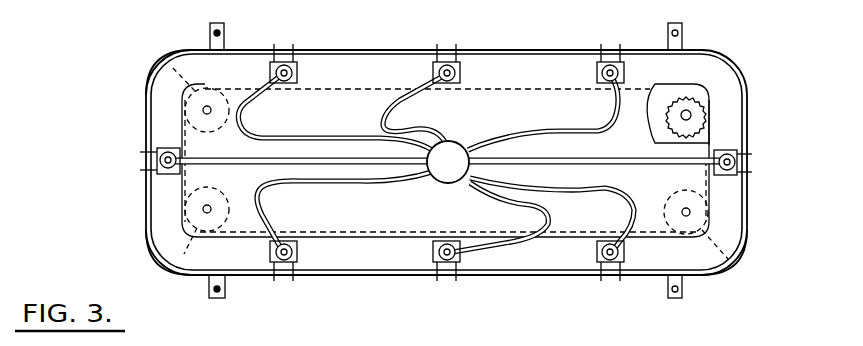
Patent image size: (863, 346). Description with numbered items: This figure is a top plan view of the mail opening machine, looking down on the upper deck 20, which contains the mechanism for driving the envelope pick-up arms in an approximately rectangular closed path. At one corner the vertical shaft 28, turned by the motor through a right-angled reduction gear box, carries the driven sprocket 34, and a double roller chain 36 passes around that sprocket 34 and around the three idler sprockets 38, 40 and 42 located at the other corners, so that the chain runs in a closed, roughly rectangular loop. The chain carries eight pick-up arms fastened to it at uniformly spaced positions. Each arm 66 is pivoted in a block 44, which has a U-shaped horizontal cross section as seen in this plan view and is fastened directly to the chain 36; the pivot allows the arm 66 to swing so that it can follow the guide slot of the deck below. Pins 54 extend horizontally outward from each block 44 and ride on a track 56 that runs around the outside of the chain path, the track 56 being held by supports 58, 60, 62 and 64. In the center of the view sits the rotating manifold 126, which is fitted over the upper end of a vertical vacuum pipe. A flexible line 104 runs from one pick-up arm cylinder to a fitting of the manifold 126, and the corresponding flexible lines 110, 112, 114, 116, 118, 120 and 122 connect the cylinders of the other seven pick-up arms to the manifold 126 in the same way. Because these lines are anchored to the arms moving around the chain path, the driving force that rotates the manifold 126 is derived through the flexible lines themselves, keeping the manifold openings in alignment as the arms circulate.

The upper deck 20 is at (722, 109).
The vertical shaft 28 is at (684, 113).
The sprocket 34 is at (694, 94).
The double roller chain 36 is at (713, 134).
The idler sprocket 38 is at (729, 260).
The idler sprocket 40 is at (183, 254).
The idler sprocket 42 is at (171, 64).
The block 44 is at (623, 257).
The pins 54 is at (599, 264).
The track 56 is at (361, 272).
The support 58 is at (682, 300).
The support 60 is at (216, 298).
The support 62 is at (224, 33).
The support 64 is at (682, 33).
The arm 66 is at (612, 262).
The flexible line 104 is at (582, 191).
The flexible line 110 is at (517, 202).
The flexible line 112 is at (318, 184).
The flexible line 114 is at (248, 157).
The flexible line 116 is at (303, 136).
The flexible line 118 is at (409, 98).
The flexible line 120 is at (549, 130).
The flexible line 122 is at (599, 158).
The rotating manifold 126 is at (451, 155).